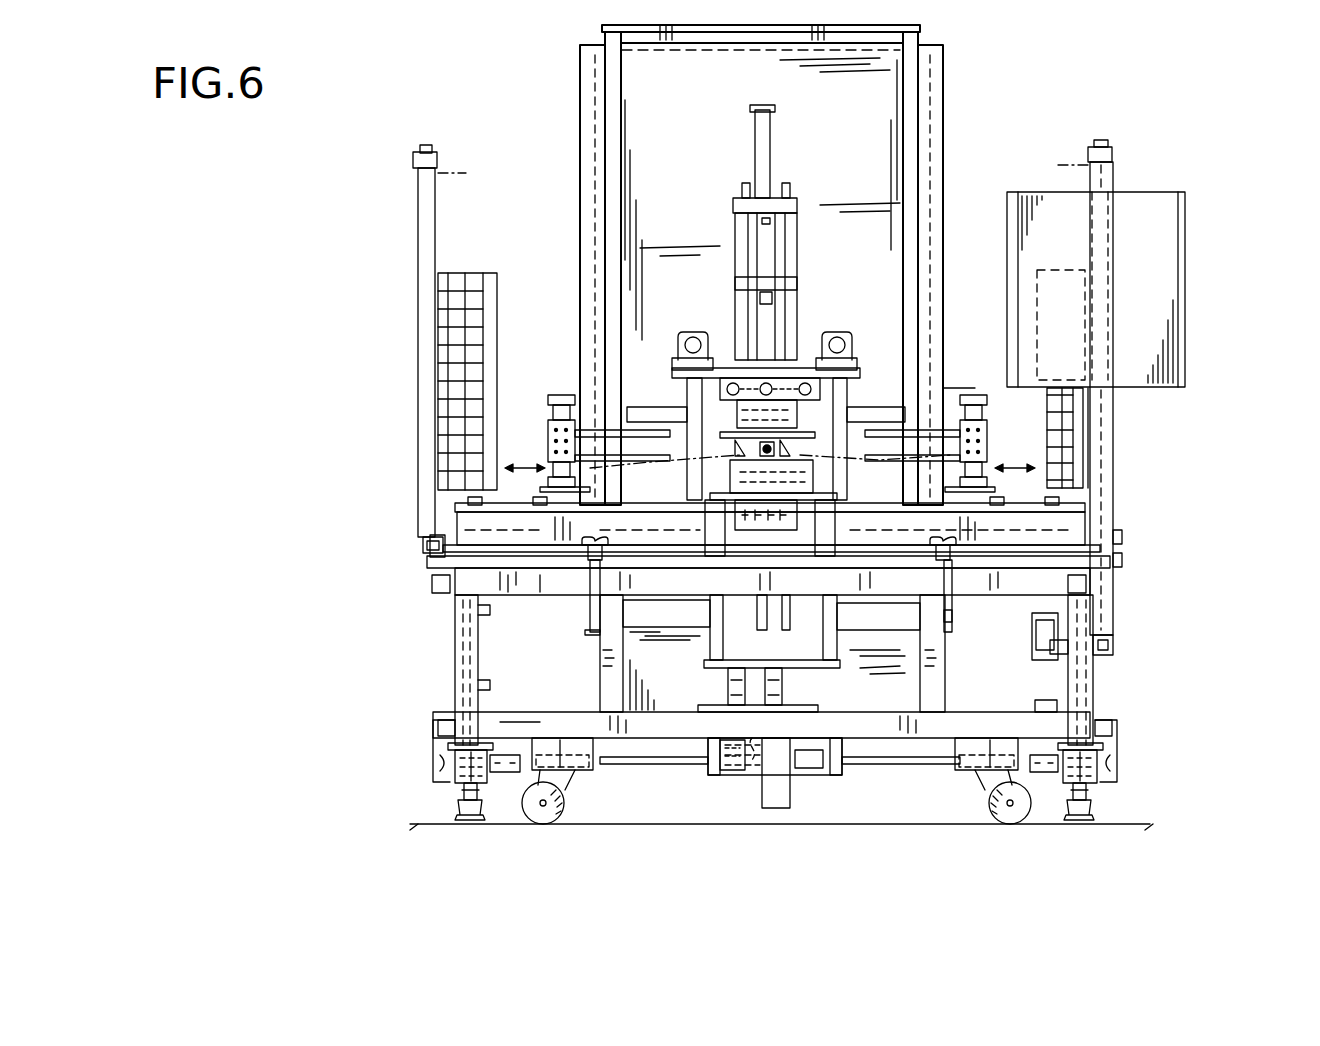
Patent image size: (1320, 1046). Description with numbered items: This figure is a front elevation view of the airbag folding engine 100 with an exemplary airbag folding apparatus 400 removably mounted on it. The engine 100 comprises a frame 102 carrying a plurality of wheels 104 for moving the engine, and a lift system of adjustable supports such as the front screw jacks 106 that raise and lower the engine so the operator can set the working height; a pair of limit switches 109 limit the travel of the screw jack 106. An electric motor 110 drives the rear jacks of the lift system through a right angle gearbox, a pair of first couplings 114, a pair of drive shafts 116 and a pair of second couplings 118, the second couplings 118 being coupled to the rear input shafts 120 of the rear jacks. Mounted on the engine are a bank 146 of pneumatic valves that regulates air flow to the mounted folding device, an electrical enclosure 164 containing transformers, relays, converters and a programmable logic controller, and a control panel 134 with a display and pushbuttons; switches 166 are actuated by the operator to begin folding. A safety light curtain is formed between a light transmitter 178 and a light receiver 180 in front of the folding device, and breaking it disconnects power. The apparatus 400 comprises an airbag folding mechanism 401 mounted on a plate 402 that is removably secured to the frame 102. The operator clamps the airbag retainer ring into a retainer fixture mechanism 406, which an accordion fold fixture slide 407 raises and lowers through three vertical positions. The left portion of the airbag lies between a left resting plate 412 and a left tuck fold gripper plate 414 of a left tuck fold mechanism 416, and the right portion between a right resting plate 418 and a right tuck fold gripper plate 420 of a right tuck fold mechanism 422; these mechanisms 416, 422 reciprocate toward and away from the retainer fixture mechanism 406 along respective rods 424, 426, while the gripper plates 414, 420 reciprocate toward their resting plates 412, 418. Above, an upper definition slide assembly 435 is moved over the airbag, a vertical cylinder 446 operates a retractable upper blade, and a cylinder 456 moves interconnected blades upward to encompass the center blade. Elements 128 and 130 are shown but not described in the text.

The airbag folding engine 100 is at (1168, 607).
The frame 102 is at (624, 745).
The wheels 104 is at (560, 808).
The front screw jacks 106 is at (463, 818).
The limit switches 109 is at (1058, 658).
The electric motor 110 is at (790, 770).
The first couplings 114 is at (740, 772).
The drive shafts 116 is at (665, 765).
The second couplings 118 is at (512, 775).
The rear input shafts 120 is at (495, 783).
The leveler plate 128 is at (442, 762).
The corner bracket 130 is at (445, 785).
The control panel 134 is at (1202, 297).
The bank of pneumatic valves 146 is at (478, 267).
The electrical enclosure 164 is at (718, 104).
The switches 166 is at (588, 548).
The light transmitter 178 is at (1105, 490).
The light receiver 180 is at (418, 385).
The apparatus 400 is at (967, 243).
The airbag folding mechanism 401 is at (722, 270).
The plate 402 is at (497, 552).
The retainer fixture mechanism 406 is at (790, 452).
The accordion fold fixture slide 407 is at (828, 691).
The left resting plate 412 is at (630, 462).
The left tuck fold gripper plate 414 is at (636, 430).
The left tuck fold mechanism 416 is at (548, 388).
The right resting plate 418 is at (885, 448).
The right tuck fold gripper plate 420 is at (868, 395).
The right tuck fold mechanism 422 is at (975, 388).
The rod 424 is at (540, 525).
The rod 426 is at (985, 525).
The upper definition slide assembly 435 is at (803, 345).
The vertical cylinder 446 is at (773, 150).
The cylinder 456 is at (775, 808).